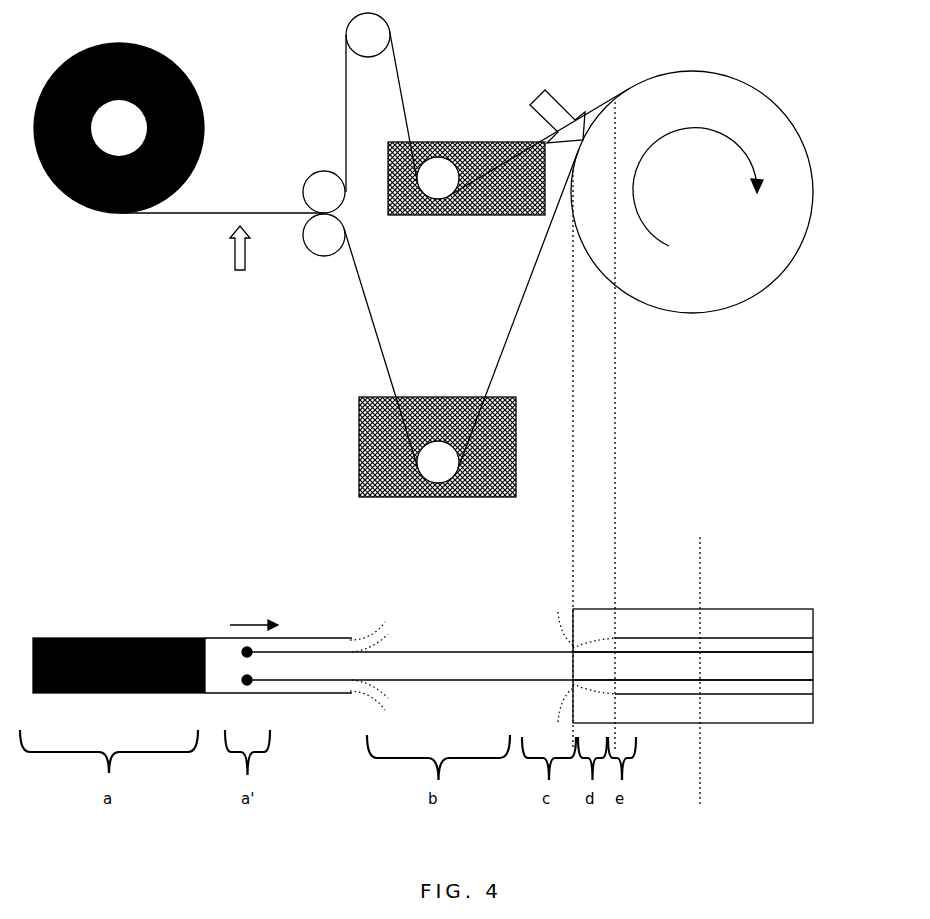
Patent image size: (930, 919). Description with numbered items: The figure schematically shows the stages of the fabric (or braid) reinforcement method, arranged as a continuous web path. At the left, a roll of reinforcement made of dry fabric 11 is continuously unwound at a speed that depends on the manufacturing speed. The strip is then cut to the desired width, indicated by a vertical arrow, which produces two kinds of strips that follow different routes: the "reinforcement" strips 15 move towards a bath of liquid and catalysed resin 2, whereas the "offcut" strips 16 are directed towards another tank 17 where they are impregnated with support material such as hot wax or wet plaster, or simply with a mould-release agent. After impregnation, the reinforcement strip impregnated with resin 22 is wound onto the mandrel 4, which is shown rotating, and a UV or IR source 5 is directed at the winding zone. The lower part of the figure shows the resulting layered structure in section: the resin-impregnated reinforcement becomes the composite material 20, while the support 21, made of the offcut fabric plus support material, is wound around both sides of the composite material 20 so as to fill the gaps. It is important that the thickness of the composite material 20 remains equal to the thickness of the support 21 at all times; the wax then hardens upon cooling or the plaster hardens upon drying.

The fabric roll 11 is at (60, 65).
The "offcut" strip 16 is at (345, 97).
The "reinforcement" strip 15 is at (375, 337).
The tank of support material 17 is at (487, 197).
The bath of liquid resin 2 is at (388, 463).
The resin-impregnated reinforcement 22 is at (500, 363).
The UV or IR source 5 is at (545, 110).
The mandrel 4 is at (728, 97).
The composite 20 is at (672, 663).
The support (reinforcement+support material) 21 is at (713, 691).